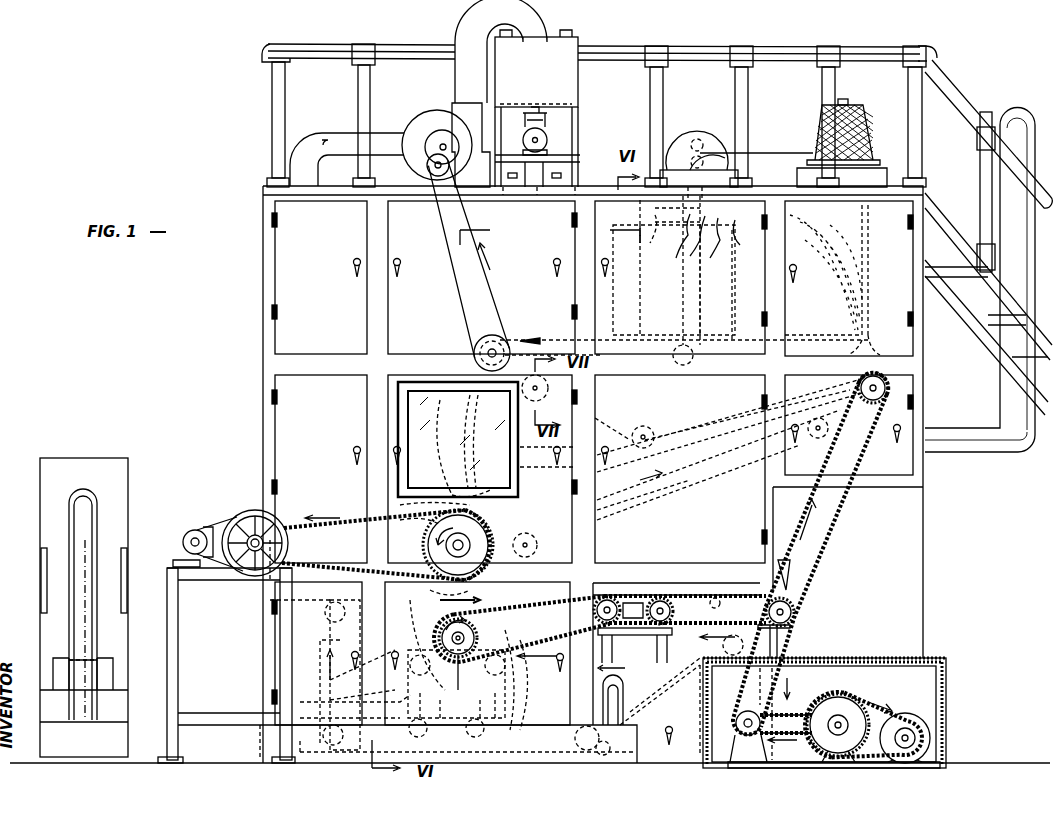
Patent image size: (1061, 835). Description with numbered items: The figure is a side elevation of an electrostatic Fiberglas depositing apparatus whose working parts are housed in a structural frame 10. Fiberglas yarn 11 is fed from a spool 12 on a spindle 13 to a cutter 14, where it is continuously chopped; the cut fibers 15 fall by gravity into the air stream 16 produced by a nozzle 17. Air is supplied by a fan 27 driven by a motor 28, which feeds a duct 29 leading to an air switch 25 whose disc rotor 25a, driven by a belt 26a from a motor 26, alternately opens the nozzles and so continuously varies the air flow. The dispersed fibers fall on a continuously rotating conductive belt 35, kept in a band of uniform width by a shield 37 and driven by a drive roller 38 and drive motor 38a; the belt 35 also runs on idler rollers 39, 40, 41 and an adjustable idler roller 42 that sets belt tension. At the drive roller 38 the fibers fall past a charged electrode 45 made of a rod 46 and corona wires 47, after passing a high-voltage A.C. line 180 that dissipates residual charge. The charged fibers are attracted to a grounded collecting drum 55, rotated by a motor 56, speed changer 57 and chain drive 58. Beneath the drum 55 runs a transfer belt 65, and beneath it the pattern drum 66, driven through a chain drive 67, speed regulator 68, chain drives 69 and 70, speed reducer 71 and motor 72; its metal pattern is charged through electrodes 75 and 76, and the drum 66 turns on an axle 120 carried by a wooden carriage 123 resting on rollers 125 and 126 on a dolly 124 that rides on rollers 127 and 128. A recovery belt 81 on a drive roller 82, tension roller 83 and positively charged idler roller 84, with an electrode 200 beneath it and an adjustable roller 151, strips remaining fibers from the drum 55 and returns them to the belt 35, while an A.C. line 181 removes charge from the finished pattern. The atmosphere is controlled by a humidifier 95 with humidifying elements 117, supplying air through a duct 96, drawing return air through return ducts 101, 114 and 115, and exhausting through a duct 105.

The structural frame 10 is at (238, 378).
The Fiberglas yarn 11 is at (775, 152).
The spool 12 is at (858, 135).
The spindle 13 is at (848, 100).
The cutter 14 is at (708, 132).
The cut fibers 15 is at (715, 240).
The air stream 16 is at (675, 235).
The nozzle 17 is at (650, 232).
The air switch 25 is at (545, 68).
The rotor 25a is at (560, 100).
The motor 26 is at (548, 137).
The belt 26a is at (548, 118).
The fan 27 is at (420, 128).
The motor 28 is at (442, 130).
The duct 29 is at (457, 20).
The belt 35 is at (616, 425).
The shield 37 is at (718, 301).
The drive roller 38 is at (488, 340).
The drive motor 38a is at (488, 205).
The idler roller 39 is at (657, 434).
The idler roller 40 is at (685, 365).
The idler roller 41 is at (855, 358).
The idler roller 42 is at (547, 421).
The charged electrode 45 is at (445, 475).
The charged rod 46 is at (458, 439).
The wires 47 is at (395, 505).
The collecting drum 55 is at (500, 510).
The motor 56 is at (192, 528).
The speed changer 57 is at (252, 513).
The chain drive 58 is at (310, 520).
The transfer belt 65 is at (325, 632).
The pattern drum 66 is at (520, 665).
The chain drive 67 is at (552, 648).
The speed regulator 68 is at (612, 598).
The chain drive 69 is at (722, 630).
The chain drive 70 is at (797, 640).
The speed reducer 71 is at (836, 693).
The motor 72 is at (909, 718).
The electrode 75 is at (435, 630).
The electrode 76 is at (519, 629).
The recovery belt 81 is at (685, 485).
The drive roller 82 is at (890, 388).
The tension roller 83 is at (815, 438).
The idler roller 84 is at (490, 570).
The humidifier 95 is at (55, 449).
The duct 96 is at (225, 720).
The return duct 101 is at (615, 700).
The duct 105 is at (1013, 108).
The return duct 114 is at (139, 740).
The return duct 115 is at (85, 522).
The humidifying elements 117 is at (105, 662).
The transverse axle 120 is at (456, 684).
The wooden carriage 123 is at (355, 700).
The dolly 124 is at (350, 715).
The roller 125 is at (424, 669).
The roller 126 is at (488, 669).
The roller 127 is at (467, 735).
The roller 128 is at (536, 737).
The roller 151 is at (690, 665).
The A.C. line 180 is at (485, 441).
The A.C. line 181 is at (795, 575).
The electrode 200 is at (630, 507).